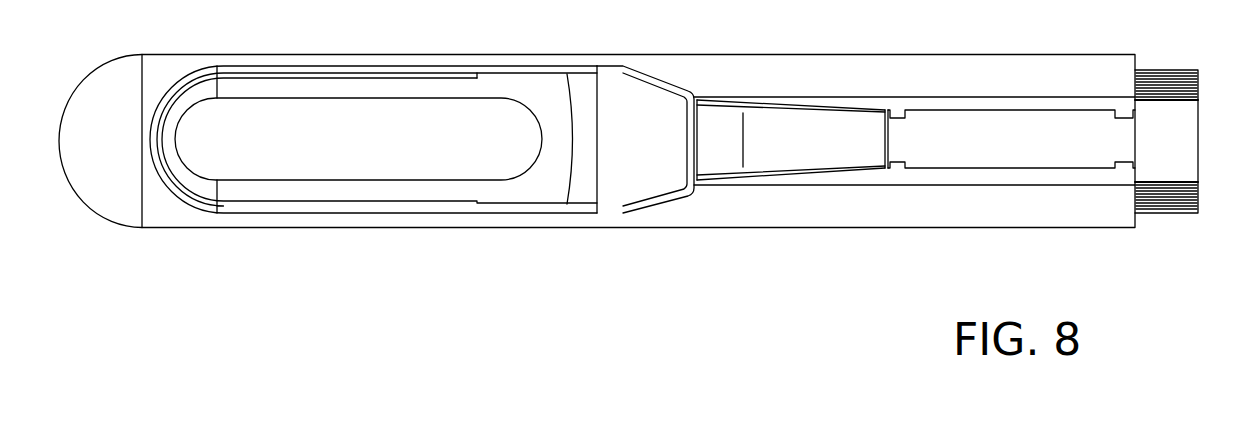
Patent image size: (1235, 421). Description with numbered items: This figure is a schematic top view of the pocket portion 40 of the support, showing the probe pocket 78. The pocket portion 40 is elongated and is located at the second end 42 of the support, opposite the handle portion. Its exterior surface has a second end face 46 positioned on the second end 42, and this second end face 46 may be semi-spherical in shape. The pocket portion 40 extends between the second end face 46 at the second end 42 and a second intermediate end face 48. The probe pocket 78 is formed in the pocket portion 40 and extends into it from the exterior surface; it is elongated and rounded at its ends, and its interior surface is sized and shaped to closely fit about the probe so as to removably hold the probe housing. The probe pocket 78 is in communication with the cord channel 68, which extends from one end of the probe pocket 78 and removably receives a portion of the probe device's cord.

The pocket portion 40 is at (634, 172).
The second end 42 is at (117, 243).
The second end face 46 is at (72, 187).
The second intermediate end face 48 is at (1198, 110).
The cord channel 68 is at (935, 137).
The probe pocket 78 is at (432, 127).